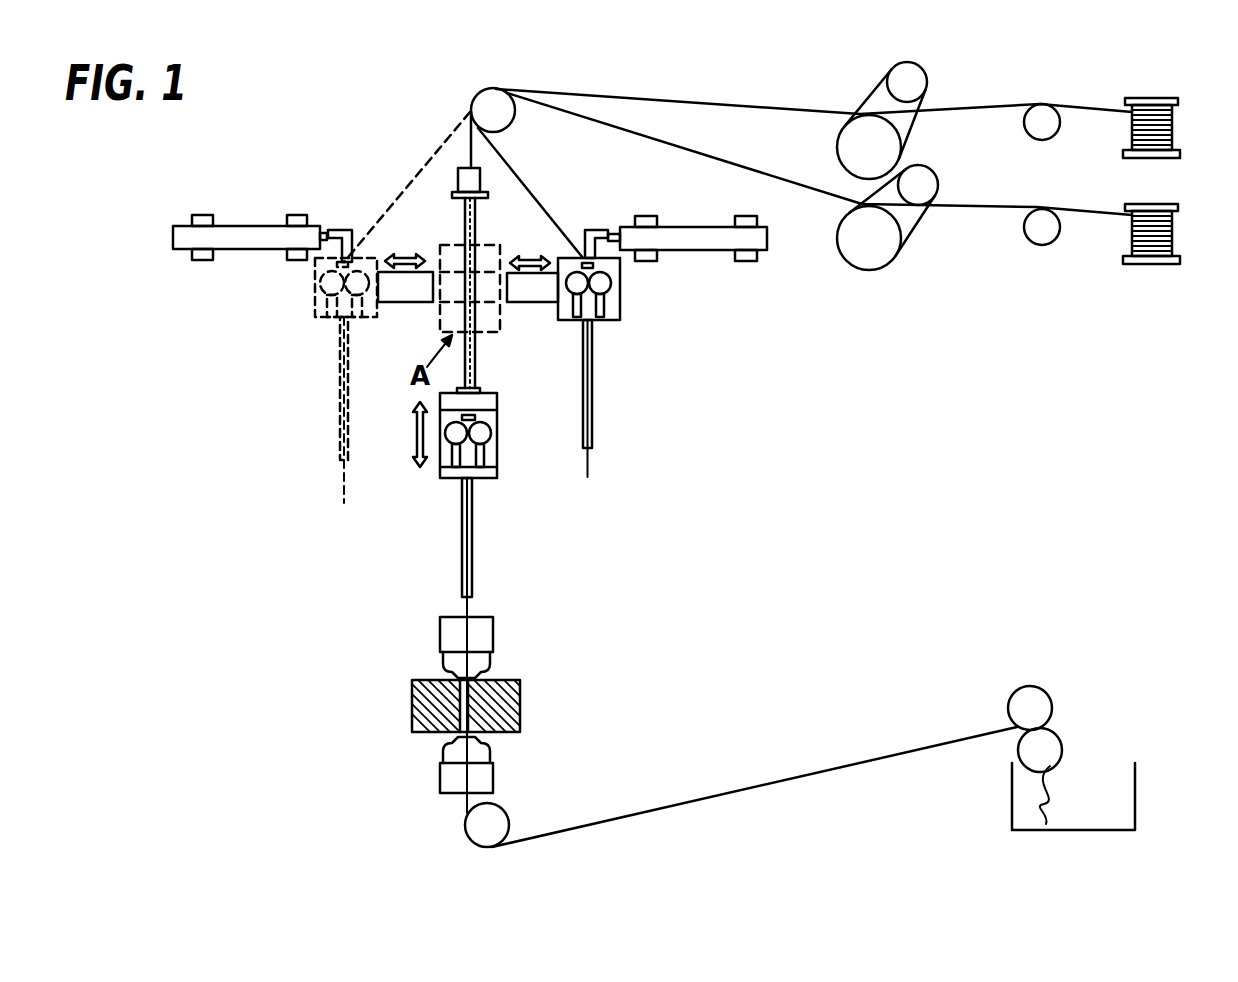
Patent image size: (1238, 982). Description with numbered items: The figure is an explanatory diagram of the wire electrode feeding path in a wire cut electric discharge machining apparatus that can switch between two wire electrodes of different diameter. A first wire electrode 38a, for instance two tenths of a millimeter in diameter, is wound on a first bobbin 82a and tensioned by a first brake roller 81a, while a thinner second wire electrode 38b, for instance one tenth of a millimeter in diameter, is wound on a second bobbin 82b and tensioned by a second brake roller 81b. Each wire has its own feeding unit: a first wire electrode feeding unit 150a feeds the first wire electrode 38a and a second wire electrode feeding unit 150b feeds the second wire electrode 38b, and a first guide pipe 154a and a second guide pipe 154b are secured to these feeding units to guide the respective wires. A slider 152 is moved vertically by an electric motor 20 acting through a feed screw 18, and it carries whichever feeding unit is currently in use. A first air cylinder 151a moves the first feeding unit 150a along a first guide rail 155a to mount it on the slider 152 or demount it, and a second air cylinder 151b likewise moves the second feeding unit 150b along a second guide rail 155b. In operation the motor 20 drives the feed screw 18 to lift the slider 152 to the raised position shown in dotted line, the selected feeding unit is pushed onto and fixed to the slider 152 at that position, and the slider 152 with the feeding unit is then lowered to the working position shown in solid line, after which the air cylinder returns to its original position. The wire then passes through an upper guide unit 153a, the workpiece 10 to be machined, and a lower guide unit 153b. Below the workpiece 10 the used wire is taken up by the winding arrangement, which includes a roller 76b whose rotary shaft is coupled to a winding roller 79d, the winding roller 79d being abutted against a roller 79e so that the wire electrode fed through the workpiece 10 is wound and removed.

The workpiece 10 is at (510, 700).
The feed screw 18 is at (477, 223).
The electric motor 20 is at (468, 177).
The first wire electrode 38a is at (452, 123).
The second wire electrode 38b is at (543, 207).
The roller 76b is at (497, 820).
The winding roller 79d is at (1030, 705).
The roller 79e is at (1045, 750).
The first brake roller 81a is at (893, 150).
The second brake roller 81b is at (883, 250).
The first bobbin 82a is at (1156, 100).
The second bobbin 82b is at (1156, 208).
The first wire electrode feeding unit 150a is at (315, 307).
The second wire electrode feeding unit 150b is at (620, 305).
The first air cylinder 151a is at (250, 237).
The second air cylinder 151b is at (690, 237).
The slider 152 is at (452, 244).
The upper guide unit 153a is at (478, 660).
The lower guide unit 153b is at (478, 753).
The first guide pipe 154a is at (340, 415).
The second guide pipe 154b is at (593, 393).
The first guide rail 155a is at (403, 292).
The second guide rail 155b is at (533, 293).